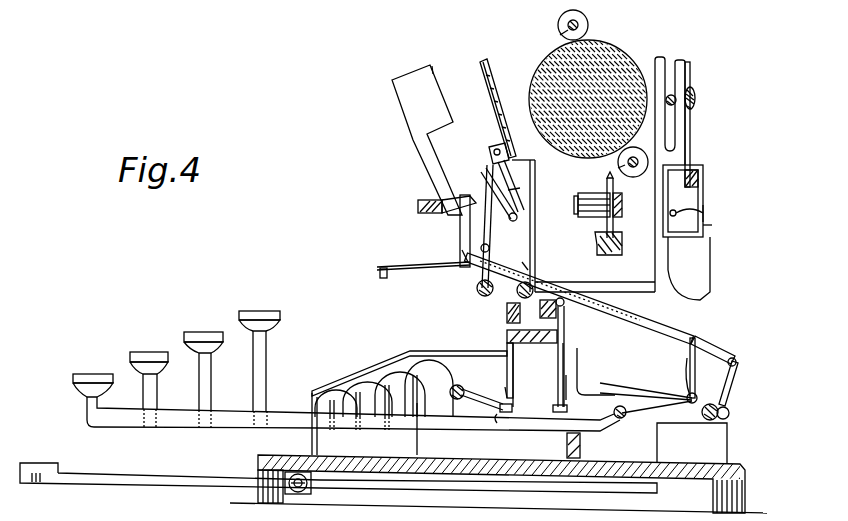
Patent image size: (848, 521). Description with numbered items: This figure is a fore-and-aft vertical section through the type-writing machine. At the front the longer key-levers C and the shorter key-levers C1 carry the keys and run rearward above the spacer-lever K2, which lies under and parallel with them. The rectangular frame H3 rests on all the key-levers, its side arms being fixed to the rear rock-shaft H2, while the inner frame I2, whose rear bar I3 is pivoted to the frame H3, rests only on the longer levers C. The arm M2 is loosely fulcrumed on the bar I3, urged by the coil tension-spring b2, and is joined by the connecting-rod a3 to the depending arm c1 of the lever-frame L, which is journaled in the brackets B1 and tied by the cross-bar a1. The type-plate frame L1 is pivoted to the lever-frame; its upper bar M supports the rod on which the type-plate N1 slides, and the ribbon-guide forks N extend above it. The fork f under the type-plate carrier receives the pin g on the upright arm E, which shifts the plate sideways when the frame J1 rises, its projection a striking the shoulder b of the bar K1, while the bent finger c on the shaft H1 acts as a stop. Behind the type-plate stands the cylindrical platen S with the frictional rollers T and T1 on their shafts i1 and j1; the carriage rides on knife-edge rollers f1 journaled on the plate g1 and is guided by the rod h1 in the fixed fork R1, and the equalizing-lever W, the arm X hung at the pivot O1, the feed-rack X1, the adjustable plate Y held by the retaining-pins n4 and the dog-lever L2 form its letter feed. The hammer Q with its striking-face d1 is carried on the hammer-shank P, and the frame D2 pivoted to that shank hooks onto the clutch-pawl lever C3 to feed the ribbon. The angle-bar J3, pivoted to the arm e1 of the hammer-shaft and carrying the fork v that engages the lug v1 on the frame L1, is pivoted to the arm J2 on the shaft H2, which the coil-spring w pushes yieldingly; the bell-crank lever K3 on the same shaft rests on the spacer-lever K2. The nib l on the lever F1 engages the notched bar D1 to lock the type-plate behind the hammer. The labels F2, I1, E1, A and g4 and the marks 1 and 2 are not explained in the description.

The rotary cylindrical platen S is at (610, 52).
The frictional roller T is at (560, 21).
The roller shaft i1 is at (560, 35).
The frictional roller T1 is at (646, 150).
The roller shaft j1 is at (618, 168).
The hammer-shank P is at (426, 162).
The striking-face d1 is at (433, 66).
The hammer Q is at (630, 240).
The ribbon-guide forks N is at (489, 80).
The type-plate N1 is at (486, 88).
The upper horizontal bar M is at (488, 152).
The pin g is at (519, 159).
The arm E is at (592, 226).
The fork or yoke f is at (514, 186).
The type-plate frame L1 is at (519, 197).
The laterally-extending fork v is at (482, 172).
The lug v1 is at (486, 185).
The cross-bar a1 is at (418, 206).
The lever-frame L is at (437, 199).
The brackets B1 is at (460, 233).
The downwardly-extending arm c1 is at (460, 256).
The rectangular frame D2 is at (413, 266).
The clutch-pawl lever C3 is at (386, 277).
The lateral arm e1 is at (477, 288).
The lever arm F2 is at (484, 297).
The shaft H1 is at (518, 296).
The diagonal lever I1 is at (560, 279).
The connecting-rod a3 is at (576, 293).
The bent finger c is at (532, 258).
The suspended bar K1 is at (530, 348).
The pivot O1 is at (545, 310).
The upright column E1 is at (507, 361).
The forward projection a is at (557, 399).
The shoulder b is at (557, 383).
The frame J1 is at (578, 357).
The block 1 is at (568, 406).
The notched bar D1 is at (505, 381).
The nib l is at (490, 400).
The curved part 2 is at (497, 416).
The lever F1 is at (473, 409).
The rectangular frame H3 is at (619, 406).
The rectangular frame I2 is at (660, 400).
The rear bar I3 is at (680, 399).
The arm M2 is at (694, 338).
The coil tension-spring b2 is at (687, 361).
The angle-bar J3 is at (716, 351).
The upwardly-extending arm J2 is at (728, 389).
The coil-spring w is at (719, 410).
The horizontal rock-shaft H2 is at (729, 414).
The bell-crank lever K3 is at (672, 424).
The base A is at (258, 458).
The spacer-lever K2 is at (165, 475).
The shorter key-levers C1 is at (87, 409).
The longer key-levers C is at (153, 393).
The fixed vertical fork R1 is at (668, 57).
The guide-rod h1 is at (668, 91).
The equalizing-lever W is at (696, 100).
The downwardly-extending arm X is at (691, 136).
The carriage feed-rack X1 is at (703, 180).
The vertically-adjustable plate Y is at (704, 213).
The retaining-pins n4 is at (712, 225).
The pivot g4 is at (686, 223).
The dog-lever L2 is at (689, 268).
The horizontal plate g1 is at (623, 206).
The carriage rollers f1 is at (614, 185).